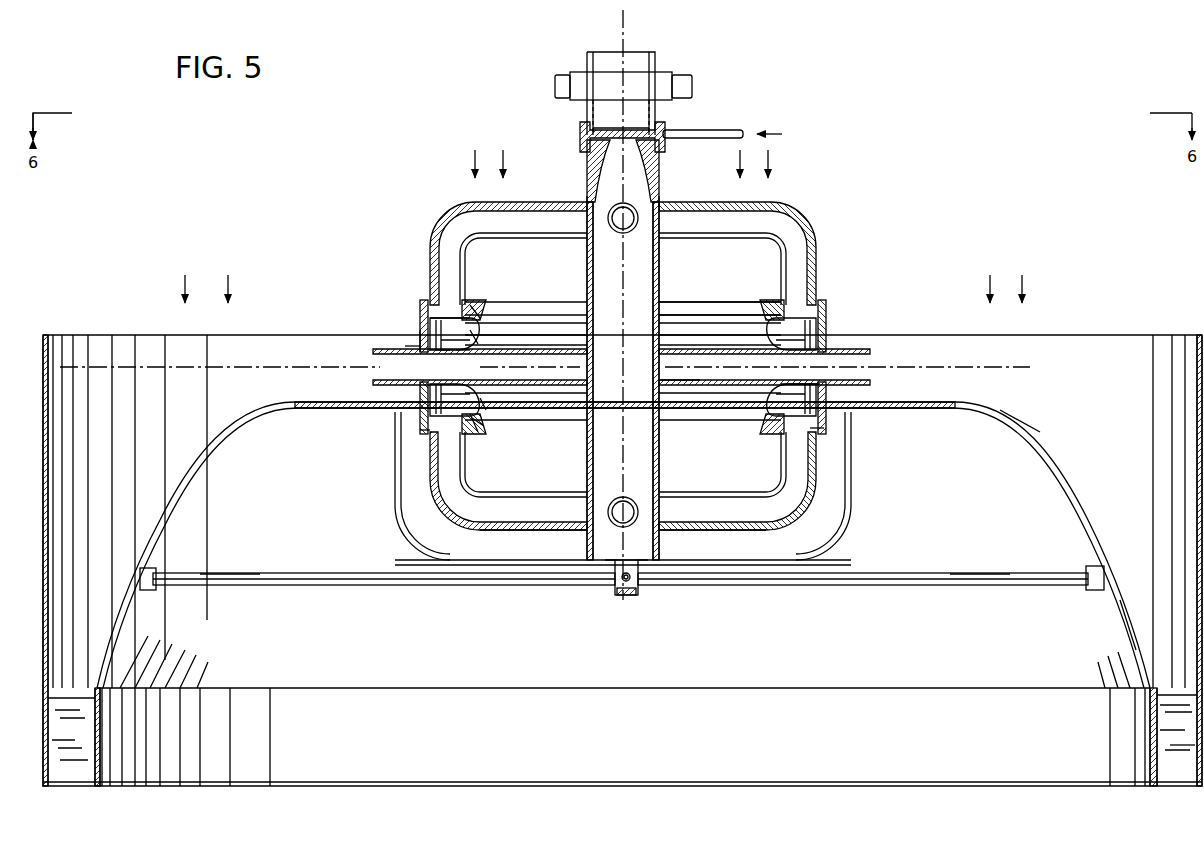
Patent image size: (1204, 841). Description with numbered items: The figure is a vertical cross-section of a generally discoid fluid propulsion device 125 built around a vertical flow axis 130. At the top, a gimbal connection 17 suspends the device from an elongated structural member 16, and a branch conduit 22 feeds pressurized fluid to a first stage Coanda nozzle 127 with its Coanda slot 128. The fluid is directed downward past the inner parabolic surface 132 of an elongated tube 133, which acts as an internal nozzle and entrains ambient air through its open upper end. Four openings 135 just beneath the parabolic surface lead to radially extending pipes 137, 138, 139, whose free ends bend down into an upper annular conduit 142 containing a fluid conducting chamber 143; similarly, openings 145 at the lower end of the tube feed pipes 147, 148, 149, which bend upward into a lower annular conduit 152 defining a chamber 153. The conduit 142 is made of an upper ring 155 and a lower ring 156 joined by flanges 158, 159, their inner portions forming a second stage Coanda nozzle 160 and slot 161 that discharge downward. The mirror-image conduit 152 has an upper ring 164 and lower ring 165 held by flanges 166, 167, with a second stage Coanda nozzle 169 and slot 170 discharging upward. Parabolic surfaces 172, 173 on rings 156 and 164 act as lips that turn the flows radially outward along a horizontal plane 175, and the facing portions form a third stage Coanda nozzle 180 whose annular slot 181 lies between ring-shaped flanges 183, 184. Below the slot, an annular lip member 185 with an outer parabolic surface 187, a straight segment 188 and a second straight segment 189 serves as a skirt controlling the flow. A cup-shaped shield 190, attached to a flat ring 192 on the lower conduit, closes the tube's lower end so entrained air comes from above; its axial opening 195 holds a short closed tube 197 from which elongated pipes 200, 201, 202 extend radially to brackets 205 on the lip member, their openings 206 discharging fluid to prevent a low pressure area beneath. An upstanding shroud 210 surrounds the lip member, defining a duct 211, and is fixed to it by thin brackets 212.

The elongated structural member 16 is at (685, 76).
The gimbal connection 17 is at (657, 68).
The branch conduit 22 is at (736, 130).
The fluid propulsion device 125 is at (1080, 332).
The first stage Coanda nozzle 127 is at (580, 142).
The Coanda slot 128 is at (616, 146).
The vertical flow axis 130 is at (629, 36).
The inner parabolic surface 132 is at (642, 148).
The tube 133 is at (659, 288).
The openings 135 is at (590, 198).
The radially extending pipe 137 is at (438, 236).
The radially extending pipe 138 is at (616, 232).
The radially extending pipe 139 is at (802, 226).
The annular conduit 142 is at (722, 300).
The fluid conducting chamber 143 is at (820, 318).
The openings 145 is at (656, 492).
The radially extending pipe 147 is at (398, 502).
The radially extending pipe 148 is at (615, 498).
The radially extending pipe 149 is at (820, 494).
The annular conduit 152 is at (716, 372).
The fluid conducting chamber 153 is at (828, 430).
The upper ring 155 is at (424, 302).
The lower ring 156 is at (406, 344).
The flange 158 is at (450, 324).
The flange 159 is at (420, 334).
The second stage Coanda nozzle 160 is at (482, 306).
The Coanda slot 161 is at (486, 328).
The upper ring 164 is at (422, 398).
The lower ring 165 is at (479, 430).
The flange 166 is at (436, 410).
The flange 167 is at (426, 436).
The second stage Coanda nozzle 169 is at (490, 422).
The Coanda slot 170 is at (488, 402).
The parabolic surface 172 is at (462, 352).
The parabolic surface 173 is at (438, 352).
The horizontal plane 175 is at (1024, 367).
The third stage Coanda nozzle 180 is at (830, 350).
The Coanda slot 181 is at (812, 366).
The ring-shaped flange 183 is at (380, 348).
The ring-shaped flange 184 is at (376, 384).
The annular lip member 185 is at (1096, 512).
The outer parabolic surface 187 is at (1040, 434).
The straight segment 188 is at (1128, 598).
The second straight segment 189 is at (1158, 756).
The cup-shaped shield 190 is at (842, 520).
The flat ring 192 is at (830, 414).
The axial opening 195 is at (608, 562).
The tube 197 is at (640, 592).
The elongated pipe 200 is at (240, 586).
The elongated pipe 201 is at (614, 586).
The elongated pipe 202 is at (964, 586).
The bracket 205 is at (150, 590).
The openings 206 is at (310, 572).
The upstanding shroud 210 is at (44, 336).
The duct 211 is at (98, 360).
The bracket 212 is at (93, 702).